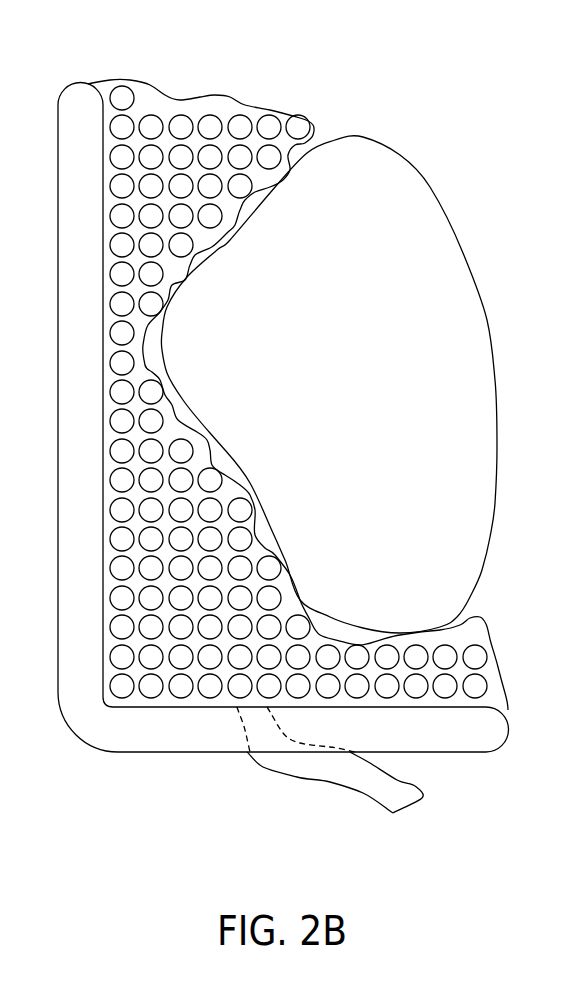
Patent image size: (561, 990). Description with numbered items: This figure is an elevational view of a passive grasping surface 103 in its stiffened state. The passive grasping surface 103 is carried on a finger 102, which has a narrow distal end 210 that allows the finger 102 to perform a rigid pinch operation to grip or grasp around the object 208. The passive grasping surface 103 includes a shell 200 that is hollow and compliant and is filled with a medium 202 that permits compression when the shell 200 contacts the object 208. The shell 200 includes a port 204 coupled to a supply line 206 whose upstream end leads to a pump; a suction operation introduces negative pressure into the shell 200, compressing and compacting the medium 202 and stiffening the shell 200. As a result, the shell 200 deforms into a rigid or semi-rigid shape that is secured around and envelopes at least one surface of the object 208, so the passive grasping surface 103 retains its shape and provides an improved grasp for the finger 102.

The passive grasping surface 103 is at (412, 73).
The finger 102 is at (112, 748).
The distal end 210 is at (85, 85).
The shell 200 is at (237, 97).
The medium 202 is at (153, 112).
The port 204 is at (240, 708).
The supply line 206 is at (418, 787).
The object 208 is at (432, 213).